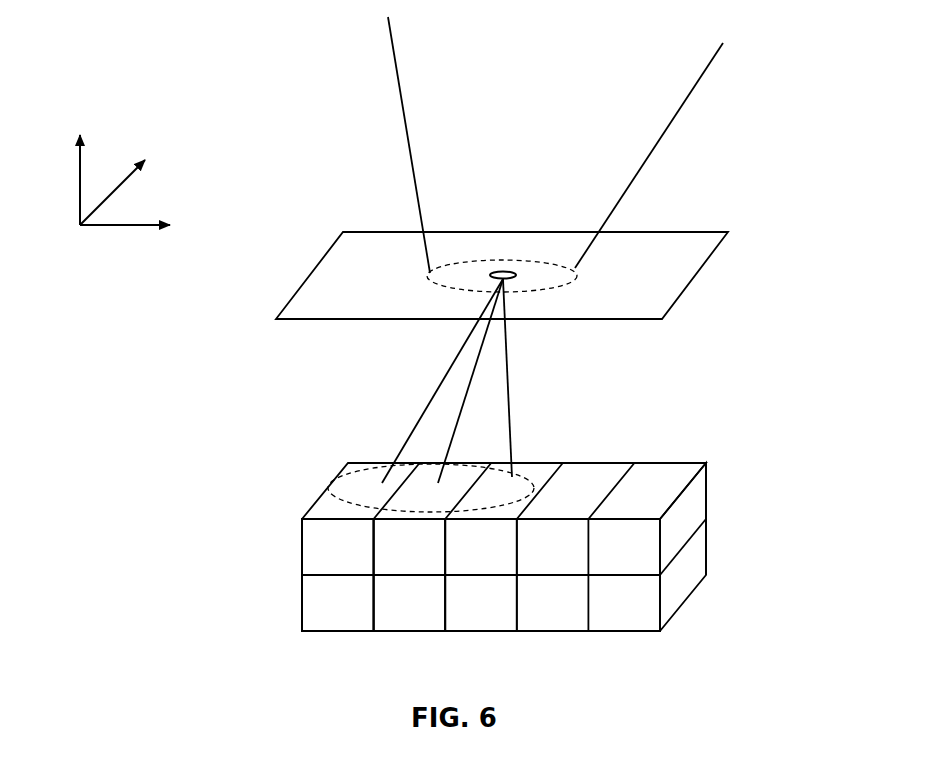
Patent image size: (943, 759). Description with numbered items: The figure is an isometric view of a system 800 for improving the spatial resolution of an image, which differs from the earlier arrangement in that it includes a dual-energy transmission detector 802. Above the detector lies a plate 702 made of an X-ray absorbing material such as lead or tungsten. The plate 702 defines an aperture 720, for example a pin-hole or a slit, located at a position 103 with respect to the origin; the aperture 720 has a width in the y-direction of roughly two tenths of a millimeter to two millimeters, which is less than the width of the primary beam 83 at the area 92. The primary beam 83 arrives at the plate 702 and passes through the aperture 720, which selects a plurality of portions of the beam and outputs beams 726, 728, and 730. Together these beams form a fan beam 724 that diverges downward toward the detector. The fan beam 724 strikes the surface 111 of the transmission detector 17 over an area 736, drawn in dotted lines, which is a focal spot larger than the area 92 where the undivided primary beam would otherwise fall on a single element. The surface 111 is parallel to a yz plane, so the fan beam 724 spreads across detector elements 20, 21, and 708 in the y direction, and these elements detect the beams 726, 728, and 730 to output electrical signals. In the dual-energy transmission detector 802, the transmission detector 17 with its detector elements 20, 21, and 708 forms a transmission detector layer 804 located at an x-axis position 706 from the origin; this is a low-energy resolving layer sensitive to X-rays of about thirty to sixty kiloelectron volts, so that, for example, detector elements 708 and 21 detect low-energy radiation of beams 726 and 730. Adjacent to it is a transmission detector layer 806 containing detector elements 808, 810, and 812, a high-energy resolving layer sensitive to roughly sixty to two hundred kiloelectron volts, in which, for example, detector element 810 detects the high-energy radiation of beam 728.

The system 800 is at (138, 50).
The primary beam 83 is at (669, 95).
The position 103 is at (450, 280).
The plate 702 is at (697, 278).
The area 92 is at (538, 278).
The aperture 720 is at (505, 271).
The fan beam 724 is at (442, 333).
The beam 726 is at (425, 410).
The beam 728 is at (475, 372).
The beam 730 is at (505, 342).
The area 736 is at (530, 452).
The surface 111 is at (657, 452).
The transmission detector 17 is at (723, 472).
The x-axis position 706 is at (720, 505).
The dual-energy transmission detector 802 is at (592, 648).
The transmission detector layer 804 is at (277, 521).
The transmission detector layer 806 is at (277, 577).
The detector element 708 is at (316, 559).
The detector element 20 is at (394, 559).
The detector element 21 is at (466, 559).
The detector element 808 is at (316, 617).
The detector element 810 is at (387, 617).
The detector element 812 is at (459, 617).